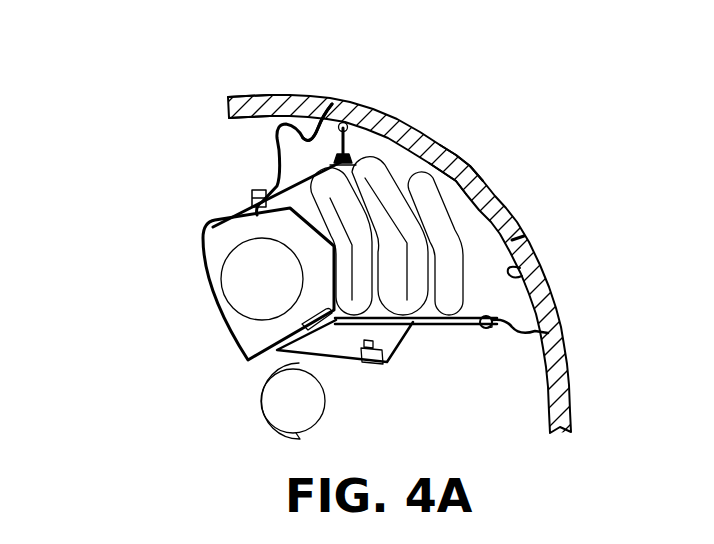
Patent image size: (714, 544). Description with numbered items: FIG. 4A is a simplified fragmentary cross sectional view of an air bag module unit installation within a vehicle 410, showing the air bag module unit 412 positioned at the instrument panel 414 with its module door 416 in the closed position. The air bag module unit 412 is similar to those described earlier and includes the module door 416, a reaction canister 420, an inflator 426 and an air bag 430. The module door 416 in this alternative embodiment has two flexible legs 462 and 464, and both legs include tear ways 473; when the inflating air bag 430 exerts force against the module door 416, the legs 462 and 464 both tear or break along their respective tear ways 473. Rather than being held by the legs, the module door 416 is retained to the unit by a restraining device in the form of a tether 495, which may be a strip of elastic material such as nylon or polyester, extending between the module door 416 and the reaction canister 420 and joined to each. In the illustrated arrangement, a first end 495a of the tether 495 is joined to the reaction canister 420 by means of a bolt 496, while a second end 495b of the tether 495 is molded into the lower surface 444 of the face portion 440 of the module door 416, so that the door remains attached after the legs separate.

The vehicle 410 is at (500, 80).
The air bag module unit 412 is at (152, 301).
The instrument panel 414 is at (252, 97).
The module door 416 is at (470, 154).
The reaction canister 420 is at (216, 322).
The inflator 426 is at (292, 294).
The air bag 430 is at (443, 228).
The face portion 440 is at (530, 237).
The lower surface 444 is at (520, 268).
The flexible leg 462 is at (497, 340).
The flexible leg 464 is at (352, 148).
The tear way 473 is at (373, 108).
The tether 495 is at (267, 136).
The first end of tether 495a is at (243, 197).
The second end of tether 495b is at (313, 100).
The bolt 496 is at (256, 190).